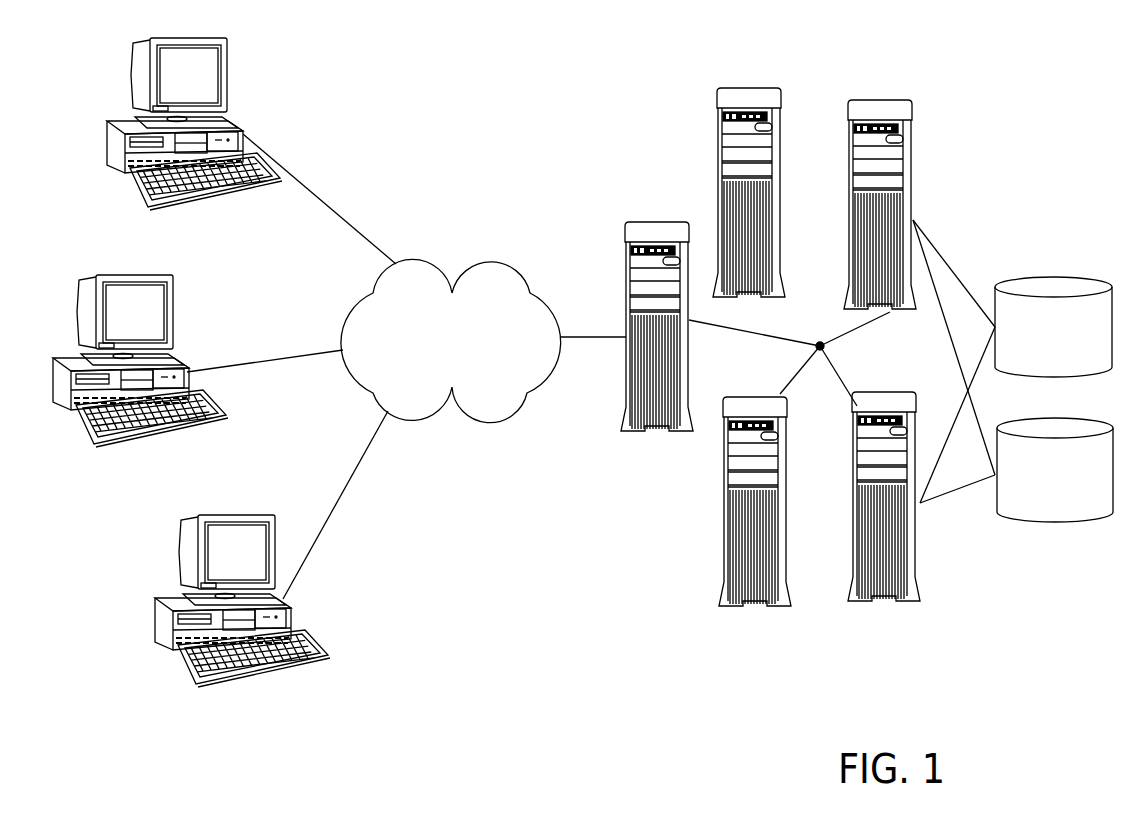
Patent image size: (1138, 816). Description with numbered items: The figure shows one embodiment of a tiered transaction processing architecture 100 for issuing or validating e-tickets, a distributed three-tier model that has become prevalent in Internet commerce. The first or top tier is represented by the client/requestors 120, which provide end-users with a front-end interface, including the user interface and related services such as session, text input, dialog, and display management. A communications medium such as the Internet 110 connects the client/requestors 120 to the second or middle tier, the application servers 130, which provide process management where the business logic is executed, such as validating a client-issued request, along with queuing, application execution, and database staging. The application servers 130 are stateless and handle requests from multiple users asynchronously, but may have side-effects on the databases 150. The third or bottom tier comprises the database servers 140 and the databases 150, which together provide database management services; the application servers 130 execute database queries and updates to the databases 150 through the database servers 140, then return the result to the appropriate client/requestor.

The tiered transaction processing architecture 100 is at (63, 168).
The Internet 110 is at (451, 340).
The client/requestors 120 is at (191, 391).
The application servers 130 is at (704, 355).
The database servers 140 is at (883, 363).
The databases 150 is at (1054, 399).